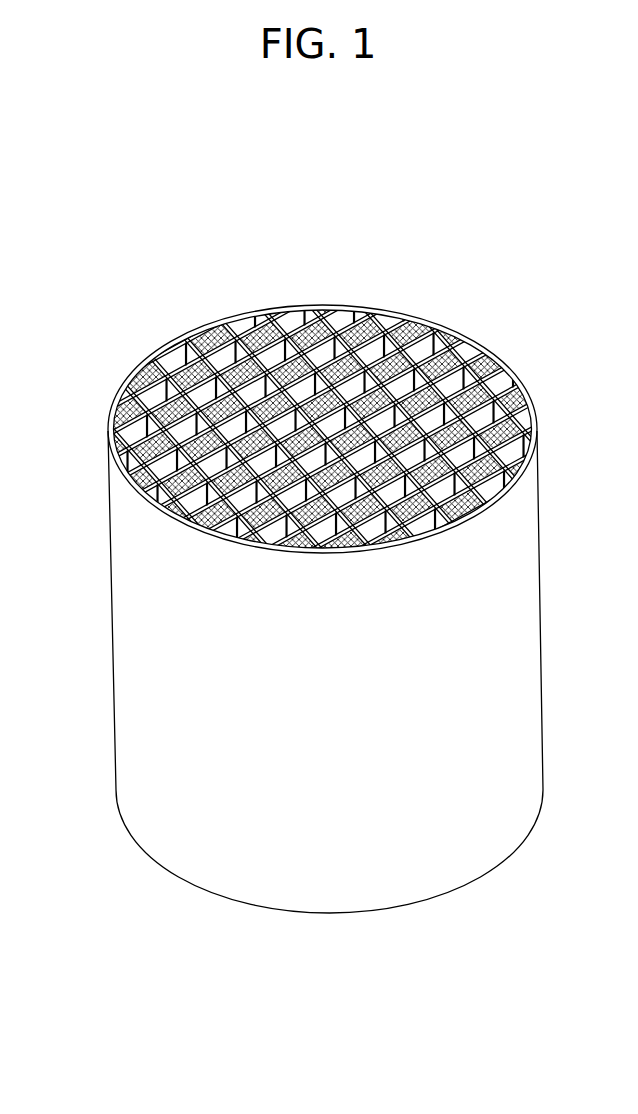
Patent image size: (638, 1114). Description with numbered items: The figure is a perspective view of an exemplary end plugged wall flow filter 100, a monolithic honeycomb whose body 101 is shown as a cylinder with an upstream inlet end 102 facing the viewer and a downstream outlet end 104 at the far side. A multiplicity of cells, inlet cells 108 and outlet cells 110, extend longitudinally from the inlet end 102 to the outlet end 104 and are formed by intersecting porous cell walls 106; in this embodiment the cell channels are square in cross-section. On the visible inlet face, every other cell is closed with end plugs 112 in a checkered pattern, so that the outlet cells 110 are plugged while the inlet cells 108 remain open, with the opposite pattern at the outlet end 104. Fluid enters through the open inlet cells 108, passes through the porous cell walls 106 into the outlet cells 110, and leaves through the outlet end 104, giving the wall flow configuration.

The end plugged wall flow filter 100 is at (453, 312).
The body 101 is at (140, 442).
The upstream inlet end 102 is at (487, 350).
The downstream outlet end 104 is at (443, 892).
The porous cell walls 106 is at (382, 320).
The inlet cells 108 is at (227, 357).
The outlet cells 110 is at (183, 345).
The end plugs 112 is at (263, 312).